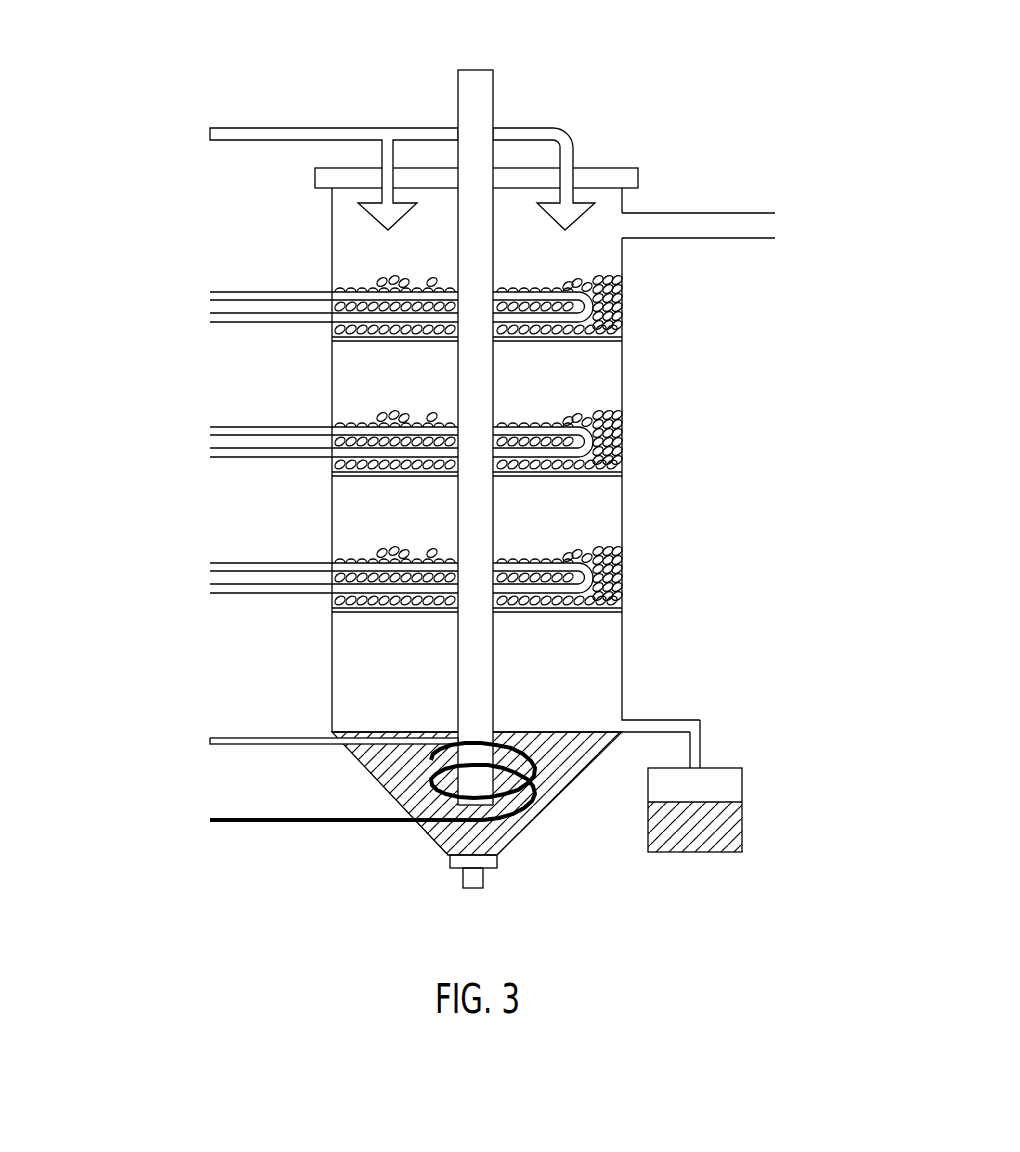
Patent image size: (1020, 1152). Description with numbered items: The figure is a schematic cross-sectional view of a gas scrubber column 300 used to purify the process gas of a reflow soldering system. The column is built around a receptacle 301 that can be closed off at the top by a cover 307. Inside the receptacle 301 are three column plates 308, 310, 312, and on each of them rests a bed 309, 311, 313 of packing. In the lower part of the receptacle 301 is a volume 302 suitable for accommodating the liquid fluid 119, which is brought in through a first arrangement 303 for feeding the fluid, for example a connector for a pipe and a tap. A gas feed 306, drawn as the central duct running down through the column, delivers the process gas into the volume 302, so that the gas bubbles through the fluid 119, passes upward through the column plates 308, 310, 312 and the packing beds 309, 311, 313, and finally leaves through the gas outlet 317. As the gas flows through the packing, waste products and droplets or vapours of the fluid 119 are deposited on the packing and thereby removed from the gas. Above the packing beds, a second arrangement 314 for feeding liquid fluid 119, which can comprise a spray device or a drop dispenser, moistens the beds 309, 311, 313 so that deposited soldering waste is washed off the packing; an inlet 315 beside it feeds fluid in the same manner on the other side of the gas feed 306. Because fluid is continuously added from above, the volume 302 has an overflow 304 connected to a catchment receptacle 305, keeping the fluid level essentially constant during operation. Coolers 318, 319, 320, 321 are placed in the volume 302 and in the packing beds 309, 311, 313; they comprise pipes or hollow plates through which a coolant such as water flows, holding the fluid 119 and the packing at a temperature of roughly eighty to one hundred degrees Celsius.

The gas scrubber column 300 is at (466, 463).
The receptacle 301 is at (332, 210).
The volume for accommodating the liquid fluid 302 is at (532, 820).
The first arrangement for feeding the fluid 303 is at (497, 870).
The overflow 304 is at (700, 735).
The catchment receptacle 305 is at (742, 820).
The gas feed 306 is at (497, 90).
The cover 307 is at (620, 168).
The column plate 308 is at (588, 608).
The bed of packing 309 is at (598, 550).
The column plate 310 is at (585, 474).
The bed of packing 311 is at (600, 397).
The column plate 312 is at (600, 339).
The bed of packing 313 is at (583, 280).
The second arrangement for feeding liquid fluid 314 is at (415, 128).
The inlet pipe 315 is at (544, 179).
The gas outlet 317 is at (718, 213).
The cooler 318 is at (236, 822).
The cooler 319 is at (236, 593).
The cooler 320 is at (236, 458).
The cooler 321 is at (236, 322).
The liquid fluid 119 is at (565, 732).